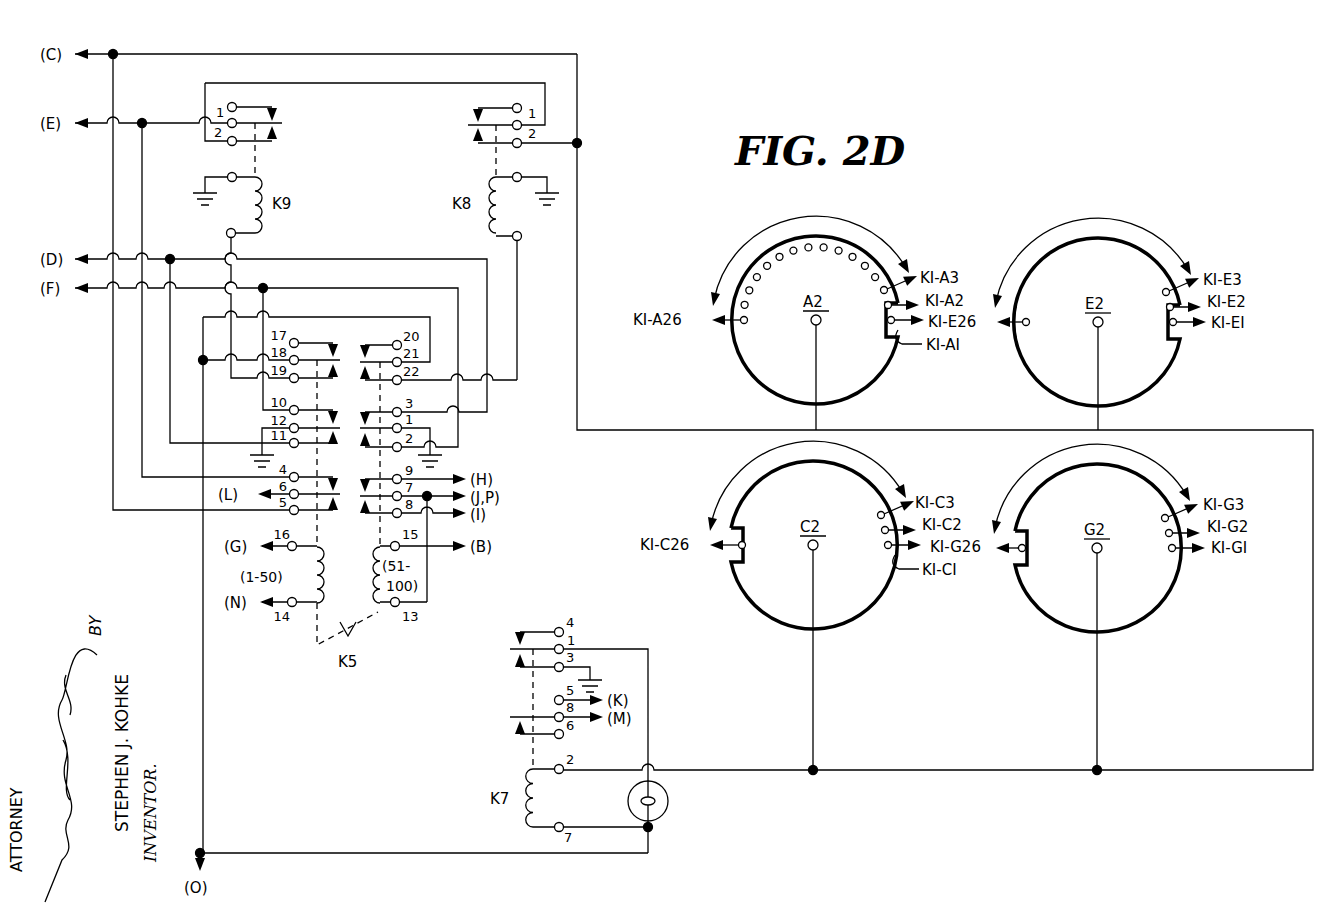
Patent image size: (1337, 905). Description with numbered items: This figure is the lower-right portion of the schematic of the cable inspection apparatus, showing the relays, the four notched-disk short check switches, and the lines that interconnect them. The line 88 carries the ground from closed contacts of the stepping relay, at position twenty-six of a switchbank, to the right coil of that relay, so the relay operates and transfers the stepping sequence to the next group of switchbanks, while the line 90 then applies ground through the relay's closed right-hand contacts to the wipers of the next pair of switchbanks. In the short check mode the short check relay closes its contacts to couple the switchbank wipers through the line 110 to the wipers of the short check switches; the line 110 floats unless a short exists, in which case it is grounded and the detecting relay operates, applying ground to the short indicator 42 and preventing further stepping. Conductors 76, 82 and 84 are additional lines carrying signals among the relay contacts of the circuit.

The conductor from terminal (C) 76 is at (114, 53).
The conductor from terminal (D) 82 is at (168, 257).
The conductor to relay contact 3 84 is at (359, 259).
The line 88 is at (437, 550).
The line 90 is at (402, 287).
The line 110 is at (578, 214).
The short indicator 42 is at (668, 801).